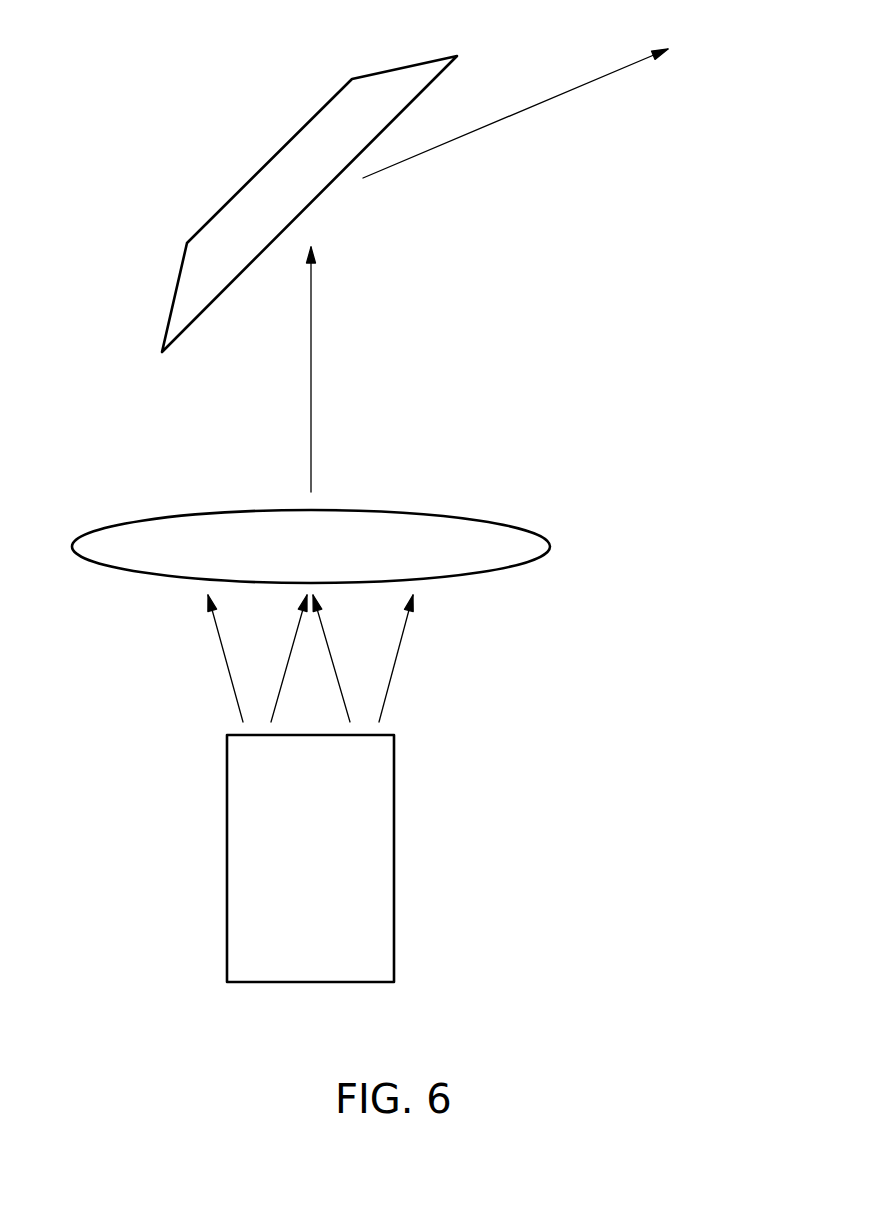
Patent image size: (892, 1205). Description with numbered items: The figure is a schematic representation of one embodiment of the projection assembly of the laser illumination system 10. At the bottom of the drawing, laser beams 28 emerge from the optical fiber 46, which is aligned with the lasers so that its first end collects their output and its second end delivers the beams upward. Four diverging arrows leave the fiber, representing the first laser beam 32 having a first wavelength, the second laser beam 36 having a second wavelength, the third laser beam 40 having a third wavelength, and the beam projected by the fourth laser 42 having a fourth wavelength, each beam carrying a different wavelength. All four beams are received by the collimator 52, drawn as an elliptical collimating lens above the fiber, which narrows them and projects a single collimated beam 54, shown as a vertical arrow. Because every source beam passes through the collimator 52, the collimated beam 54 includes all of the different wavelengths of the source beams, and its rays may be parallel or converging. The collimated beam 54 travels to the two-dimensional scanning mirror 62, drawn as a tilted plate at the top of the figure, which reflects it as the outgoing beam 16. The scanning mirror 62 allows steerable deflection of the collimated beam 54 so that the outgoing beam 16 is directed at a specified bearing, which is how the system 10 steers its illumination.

The system 10 is at (690, 165).
The outgoing beam 16 is at (559, 96).
The laser beams 28 is at (153, 708).
The first laser beam 32 is at (219, 650).
The second laser beam 36 is at (290, 655).
The third laser beam 40 is at (332, 655).
The fourth laser 42 is at (400, 650).
The optical fiber 46 is at (395, 853).
The collimator 52 is at (523, 527).
The collimated beam 54 is at (313, 367).
The two-dimensional scanning mirror 62 is at (270, 163).